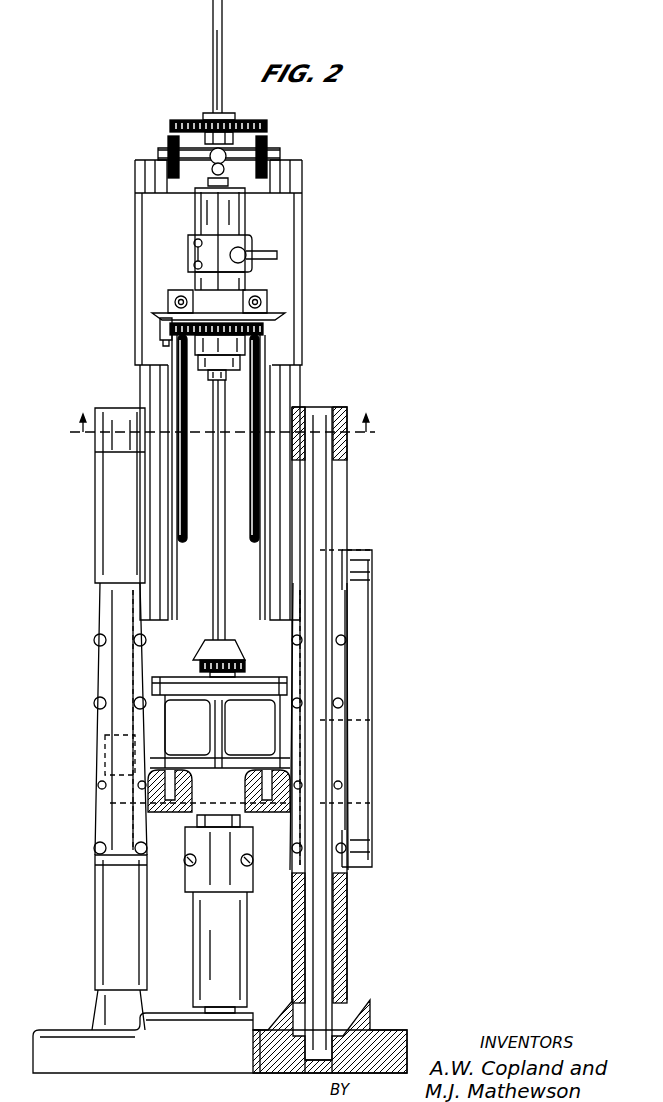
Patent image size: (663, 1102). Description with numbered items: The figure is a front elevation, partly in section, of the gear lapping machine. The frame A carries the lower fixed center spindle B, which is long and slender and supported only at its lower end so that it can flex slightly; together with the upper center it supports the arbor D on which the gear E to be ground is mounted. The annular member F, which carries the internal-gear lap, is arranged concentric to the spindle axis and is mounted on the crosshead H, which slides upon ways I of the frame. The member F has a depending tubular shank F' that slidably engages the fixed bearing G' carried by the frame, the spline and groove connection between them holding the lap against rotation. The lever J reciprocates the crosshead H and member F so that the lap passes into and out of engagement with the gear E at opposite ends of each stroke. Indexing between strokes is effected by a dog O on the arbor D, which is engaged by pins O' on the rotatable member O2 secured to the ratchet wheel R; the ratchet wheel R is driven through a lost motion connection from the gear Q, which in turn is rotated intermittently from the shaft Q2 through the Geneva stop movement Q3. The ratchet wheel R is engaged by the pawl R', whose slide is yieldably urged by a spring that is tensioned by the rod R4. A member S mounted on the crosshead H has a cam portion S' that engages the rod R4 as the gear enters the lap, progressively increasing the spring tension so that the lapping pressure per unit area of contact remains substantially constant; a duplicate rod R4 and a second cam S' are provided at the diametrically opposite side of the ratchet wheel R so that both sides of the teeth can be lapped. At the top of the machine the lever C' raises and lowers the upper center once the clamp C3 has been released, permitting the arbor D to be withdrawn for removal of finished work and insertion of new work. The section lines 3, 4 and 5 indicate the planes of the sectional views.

The shaft Q2 is at (213, 46).
The section line 3 is at (215, 96).
The Geneva stop movement Q3 is at (267, 124).
The lever C' is at (190, 134).
The section line 4 is at (165, 189).
The frame A is at (135, 245).
The clamp C3 is at (277, 255).
The gear Q is at (218, 315).
The rod R4 is at (168, 300).
The pawl R' is at (138, 334).
The ratchet wheel R is at (232, 323).
The rotatable member O2 is at (245, 343).
The pins O' is at (247, 355).
The dog O is at (223, 379).
The cam portion S' is at (213, 477).
The ways I is at (110, 405).
The section line 5 is at (222, 415).
The arbor D is at (213, 484).
The member S is at (218, 450).
The gear E is at (185, 677).
The crosshead H is at (120, 708).
The lever J is at (219, 806).
The annular member F is at (200, 761).
The tubular shank F' is at (236, 838).
The fixed bearing G' is at (209, 920).
The center spindle B is at (220, 1015).